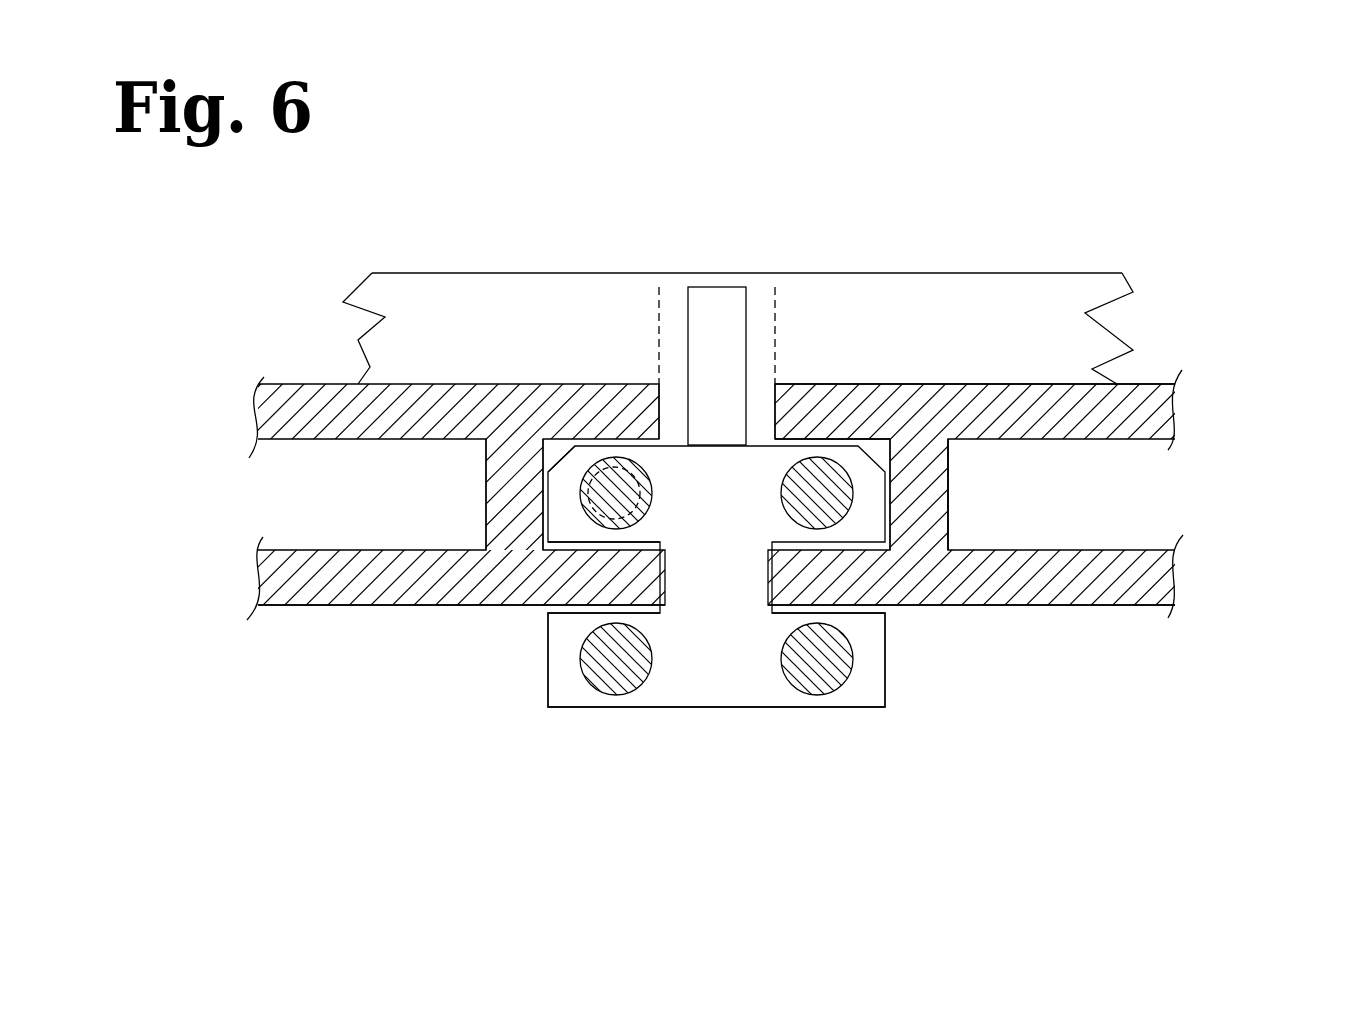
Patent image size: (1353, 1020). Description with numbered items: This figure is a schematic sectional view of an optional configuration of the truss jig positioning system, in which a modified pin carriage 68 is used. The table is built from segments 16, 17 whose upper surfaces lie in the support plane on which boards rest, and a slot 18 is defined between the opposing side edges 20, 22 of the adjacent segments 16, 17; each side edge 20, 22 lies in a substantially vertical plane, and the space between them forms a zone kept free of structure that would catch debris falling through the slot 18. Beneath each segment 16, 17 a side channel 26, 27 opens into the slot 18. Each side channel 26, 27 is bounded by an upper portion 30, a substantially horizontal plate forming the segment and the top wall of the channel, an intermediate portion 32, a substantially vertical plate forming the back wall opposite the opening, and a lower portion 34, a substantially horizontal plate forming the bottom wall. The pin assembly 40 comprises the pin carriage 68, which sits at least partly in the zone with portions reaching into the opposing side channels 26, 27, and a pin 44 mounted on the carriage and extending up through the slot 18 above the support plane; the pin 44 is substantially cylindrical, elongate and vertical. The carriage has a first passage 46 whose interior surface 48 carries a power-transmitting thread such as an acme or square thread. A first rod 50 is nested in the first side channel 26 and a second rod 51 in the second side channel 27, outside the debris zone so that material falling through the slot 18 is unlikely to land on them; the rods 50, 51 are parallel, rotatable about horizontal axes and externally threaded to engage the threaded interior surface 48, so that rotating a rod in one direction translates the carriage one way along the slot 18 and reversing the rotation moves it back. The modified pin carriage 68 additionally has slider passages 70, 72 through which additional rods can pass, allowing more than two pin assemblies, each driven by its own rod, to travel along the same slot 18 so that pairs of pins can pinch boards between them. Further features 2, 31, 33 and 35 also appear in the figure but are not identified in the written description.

The glass pane 2 is at (398, 347).
The segment 16 is at (433, 397).
The segment 17 is at (880, 447).
The slot 18 is at (760, 410).
The side edge 20 is at (655, 405).
The side edge 22 is at (833, 403).
The side channel 26 is at (553, 447).
The side channel 27 is at (903, 410).
The upper portion 30 is at (573, 398).
The right leg 31 is at (893, 403).
The intermediate portion 32 is at (480, 487).
The right channel 33 is at (948, 492).
The lower portion 34 is at (583, 490).
The lower right frame member 35 is at (920, 570).
The pin assembly 40 is at (762, 303).
The pin 44 is at (712, 312).
The first passage 46 is at (643, 523).
The interior surface 48 is at (533, 520).
The first rod 50 is at (615, 493).
The second rod 51 is at (817, 492).
The pin carriage 68 is at (718, 650).
The slider passage 70 is at (623, 673).
The slider passage 72 is at (822, 670).